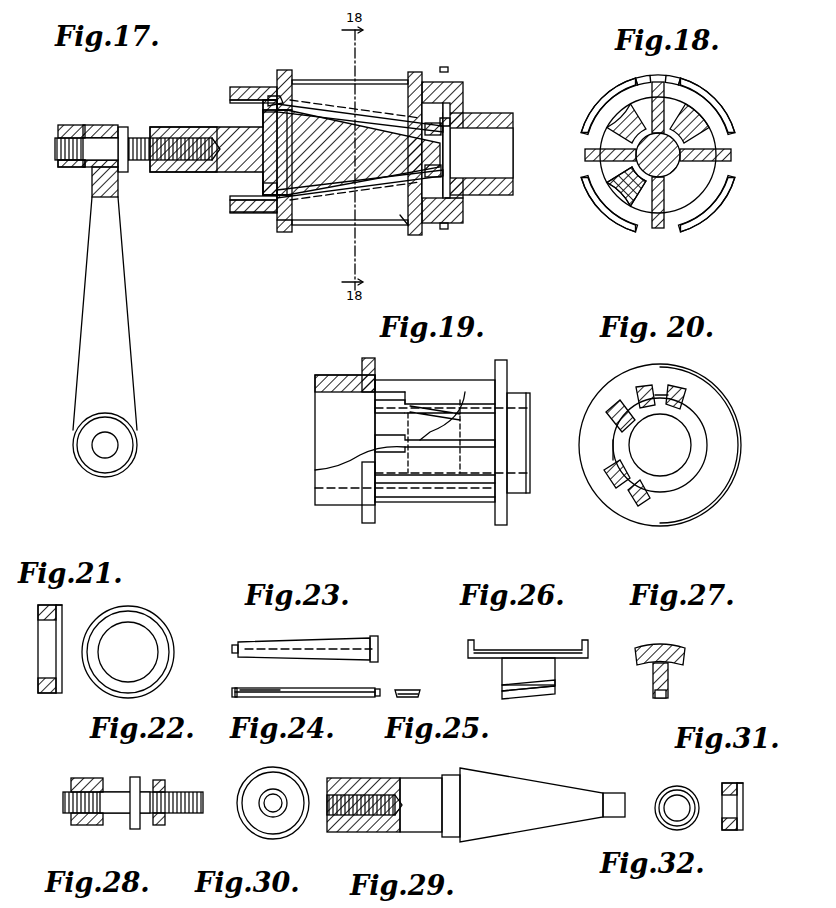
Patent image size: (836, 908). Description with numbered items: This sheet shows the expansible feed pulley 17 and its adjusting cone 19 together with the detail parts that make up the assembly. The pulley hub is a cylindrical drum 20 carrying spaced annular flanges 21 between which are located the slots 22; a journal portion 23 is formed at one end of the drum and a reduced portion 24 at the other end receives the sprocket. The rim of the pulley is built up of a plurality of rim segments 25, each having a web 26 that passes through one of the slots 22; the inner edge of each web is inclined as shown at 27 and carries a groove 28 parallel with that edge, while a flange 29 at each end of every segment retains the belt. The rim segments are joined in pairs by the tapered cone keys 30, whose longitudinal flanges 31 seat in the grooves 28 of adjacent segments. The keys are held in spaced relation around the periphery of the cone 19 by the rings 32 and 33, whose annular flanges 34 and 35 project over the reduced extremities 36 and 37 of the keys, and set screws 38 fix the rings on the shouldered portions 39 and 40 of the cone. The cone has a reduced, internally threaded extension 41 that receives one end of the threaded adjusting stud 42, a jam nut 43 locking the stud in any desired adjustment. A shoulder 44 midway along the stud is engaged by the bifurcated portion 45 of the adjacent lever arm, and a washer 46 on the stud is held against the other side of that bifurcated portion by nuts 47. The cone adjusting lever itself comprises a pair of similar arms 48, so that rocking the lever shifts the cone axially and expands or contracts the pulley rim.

In FIG. 17, the pulley 17 is at (416, 72).
In FIG. 17, the cone 19 is at (345, 160).
In FIG. 18, the cone 19 is at (676, 201).
In FIG. 30, the cone 19 is at (292, 780).
In FIG. 29, the cone 19 is at (510, 780).
In FIG. 17, the cylindrical drum 20 is at (282, 220).
In FIG. 19, the cylindrical drum 20 is at (322, 377).
In FIG. 20, the cylindrical drum 20 is at (738, 425).
In FIG. 17, the annular flanges 21 is at (284, 232).
In FIG. 19, the annular flanges 21 is at (370, 370).
In FIG. 20, the annular flanges 21 is at (695, 395).
In FIG. 19, the slots 22 is at (378, 437).
In FIG. 20, the slots 22 is at (612, 430).
In FIG. 17, the journal portion 23 is at (250, 87).
In FIG. 19, the journal portion 23 is at (330, 503).
In FIG. 17, the reduced portion 24 is at (458, 205).
In FIG. 19, the reduced portion 24 is at (525, 493).
In FIG. 20, the reduced portion 24 is at (690, 488).
In FIG. 17, the rim segments 25 is at (340, 80).
In FIG. 18, the rim segments 25 is at (652, 153).
In FIG. 26, the rim segments 25 is at (482, 660).
In FIG. 27, the rim segments 25 is at (688, 657).
In FIG. 18, the web 26 is at (642, 172).
In FIG. 26, the web 26 is at (552, 668).
In FIG. 27, the web 26 is at (670, 682).
In FIG. 26, the inclined inner edge 27 is at (526, 692).
In FIG. 18, the groove 28 is at (683, 155).
In FIG. 26, the groove 28 is at (548, 696).
In FIG. 27, the groove 28 is at (655, 692).
In FIG. 26, the flange 29 is at (471, 642).
In FIG. 27, the flange 29 is at (660, 647).
In FIG. 17, the cone keys 30 is at (378, 195).
In FIG. 18, the cone keys 30 is at (631, 240).
In FIG. 23, the cone keys 30 is at (325, 642).
In FIG. 24, the cone keys 30 is at (264, 690).
In FIG. 25, the cone keys 30 is at (406, 690).
In FIG. 17, the longitudinal flanges 31 is at (355, 150).
In FIG. 18, the longitudinal flanges 31 is at (658, 142).
In FIG. 24, the longitudinal flanges 31 is at (315, 689).
In FIG. 25, the longitudinal flanges 31 is at (418, 690).
In FIG. 17, the ring 32 is at (262, 192).
In FIG. 21, the ring 32 is at (48, 693).
In FIG. 22, the ring 32 is at (160, 640).
In FIG. 17, the ring 33 is at (447, 160).
In FIG. 32, the ring 33 is at (670, 790).
In FIG. 31, the ring 33 is at (737, 830).
In FIG. 17, the annular flange 34 is at (240, 212).
In FIG. 21, the annular flange 34 is at (62, 690).
In FIG. 22, the annular flange 34 is at (163, 673).
In FIG. 17, the annular flange 35 is at (405, 222).
In FIG. 32, the annular flange 35 is at (680, 788).
In FIG. 31, the annular flange 35 is at (730, 783).
In FIG. 17, the reduced extremity 36 is at (284, 100).
In FIG. 23, the reduced extremity 36 is at (376, 640).
In FIG. 24, the reduced extremity 36 is at (376, 697).
In FIG. 17, the reduced extremity 37 is at (448, 125).
In FIG. 23, the reduced extremity 37 is at (232, 650).
In FIG. 24, the reduced extremity 37 is at (236, 692).
In FIG. 17, the set screws 38 is at (270, 100).
In FIG. 17, the shouldered portion 39 is at (265, 120).
In FIG. 29, the shouldered portion 39 is at (450, 775).
In FIG. 17, the shouldered portion 40 is at (470, 113).
In FIG. 29, the shouldered portion 40 is at (608, 793).
In FIG. 17, the internally threaded extension 41 is at (170, 127).
In FIG. 30, the internally threaded extension 41 is at (258, 820).
In FIG. 29, the internally threaded extension 41 is at (366, 778).
In FIG. 17, the adjusting stud 42 is at (160, 160).
In FIG. 28, the adjusting stud 42 is at (190, 792).
In FIG. 17, the jam nut 43 is at (122, 127).
In FIG. 28, the jam nut 43 is at (150, 780).
In FIG. 17, the shoulder 44 is at (95, 190).
In FIG. 17, the bifurcated portion 45 is at (95, 125).
In FIG. 17, the washer 46 is at (75, 167).
In FIG. 28, the washer 46 is at (85, 825).
In FIG. 17, the nuts 47 is at (62, 126).
In FIG. 28, the nuts 47 is at (80, 780).
In FIG. 17, the arms 48 is at (122, 365).